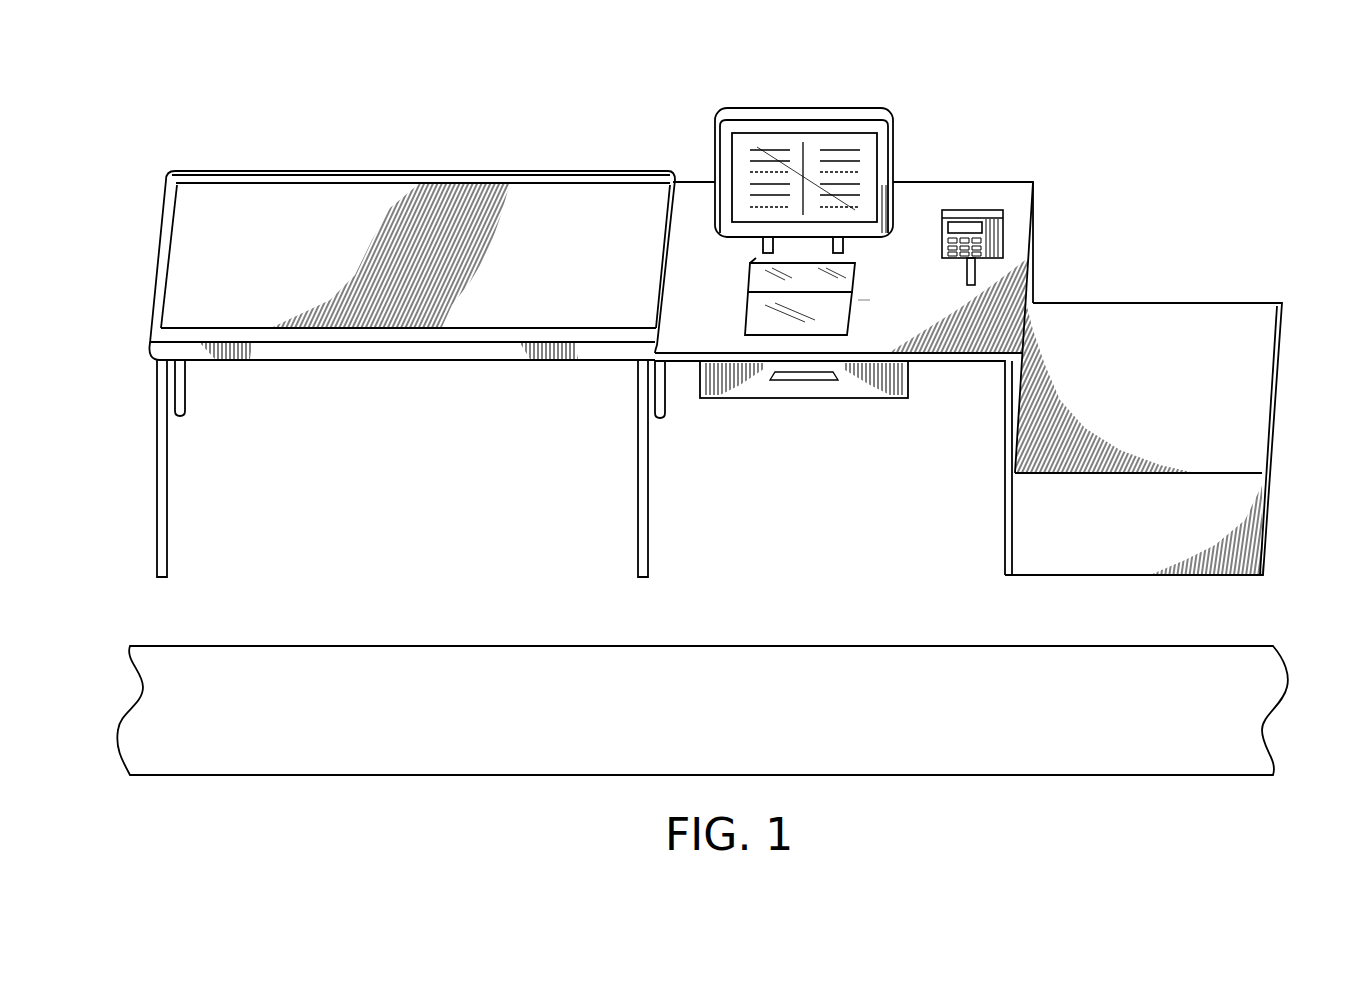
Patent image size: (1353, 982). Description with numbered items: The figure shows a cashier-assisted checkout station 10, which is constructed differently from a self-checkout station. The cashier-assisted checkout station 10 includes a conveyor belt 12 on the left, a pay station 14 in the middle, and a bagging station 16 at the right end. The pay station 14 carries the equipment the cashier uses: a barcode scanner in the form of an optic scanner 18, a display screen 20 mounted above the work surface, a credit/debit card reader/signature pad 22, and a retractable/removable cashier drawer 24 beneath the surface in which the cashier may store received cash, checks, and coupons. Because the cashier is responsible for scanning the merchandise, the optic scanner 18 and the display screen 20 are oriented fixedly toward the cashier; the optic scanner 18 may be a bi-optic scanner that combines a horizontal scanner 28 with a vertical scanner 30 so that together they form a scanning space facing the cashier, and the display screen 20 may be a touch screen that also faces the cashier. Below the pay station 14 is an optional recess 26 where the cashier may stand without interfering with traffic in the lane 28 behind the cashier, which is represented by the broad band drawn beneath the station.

The cashier-assisted checkout station 10 is at (560, 70).
The conveyor belt 12 is at (283, 208).
The pay station 14 is at (958, 181).
The bagging station 16 is at (1190, 303).
The optic scanner 18 is at (870, 300).
The display screen 20 is at (828, 140).
The credit/debit card reader/signature pad 22 is at (968, 226).
The retractable/removable cashier drawer 24 is at (812, 393).
The recess 26 is at (906, 610).
The lane 28 is at (745, 300).
The vertical scanner 30 is at (748, 268).